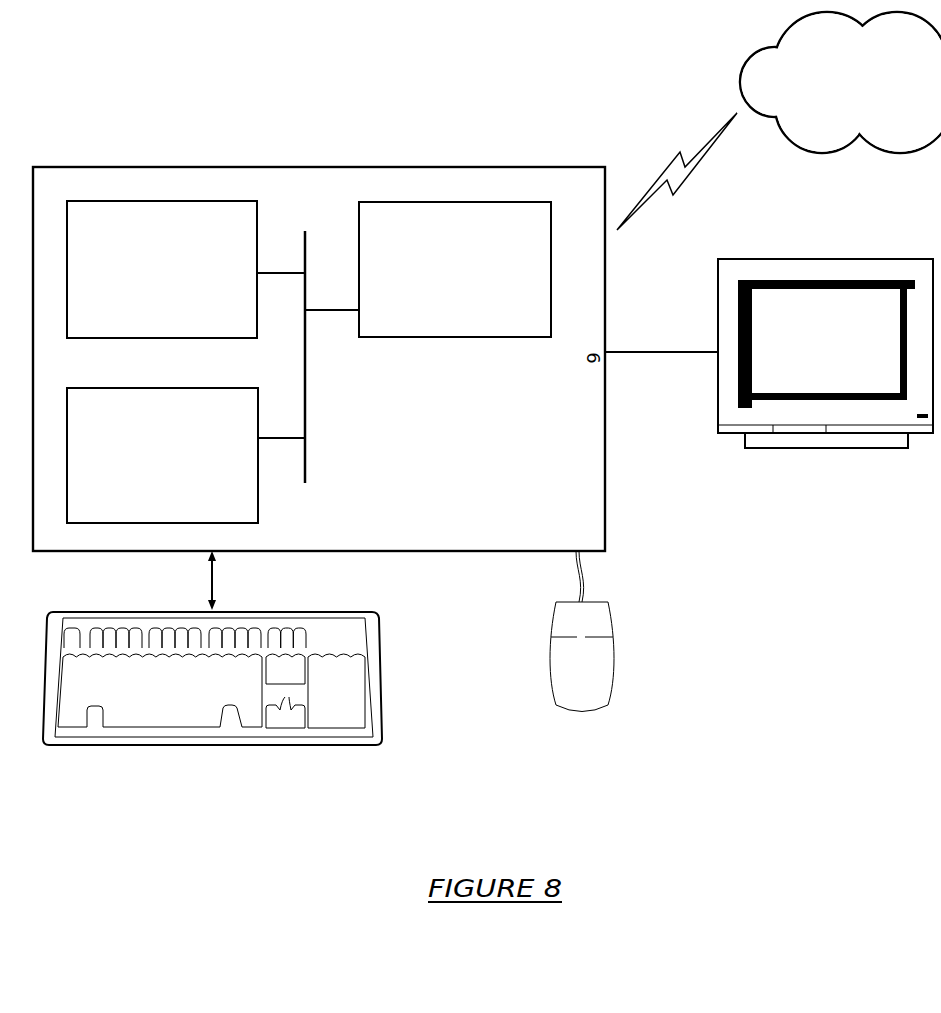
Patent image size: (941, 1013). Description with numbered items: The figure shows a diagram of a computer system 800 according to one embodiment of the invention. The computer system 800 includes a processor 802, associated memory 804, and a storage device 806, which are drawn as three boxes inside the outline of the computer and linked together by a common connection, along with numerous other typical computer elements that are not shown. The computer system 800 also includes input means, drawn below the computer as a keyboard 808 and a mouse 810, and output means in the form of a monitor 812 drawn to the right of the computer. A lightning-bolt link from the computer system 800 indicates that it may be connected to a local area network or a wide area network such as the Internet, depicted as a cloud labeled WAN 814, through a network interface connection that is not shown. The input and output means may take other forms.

The computer system 800 is at (82, 154).
The processor 802 is at (454, 279).
The associated memory 804 is at (146, 279).
The storage device 806 is at (144, 466).
The keyboard 808 is at (137, 711).
The mouse 810 is at (566, 674).
The monitor 812 is at (807, 349).
The wide area network 814 is at (857, 105).